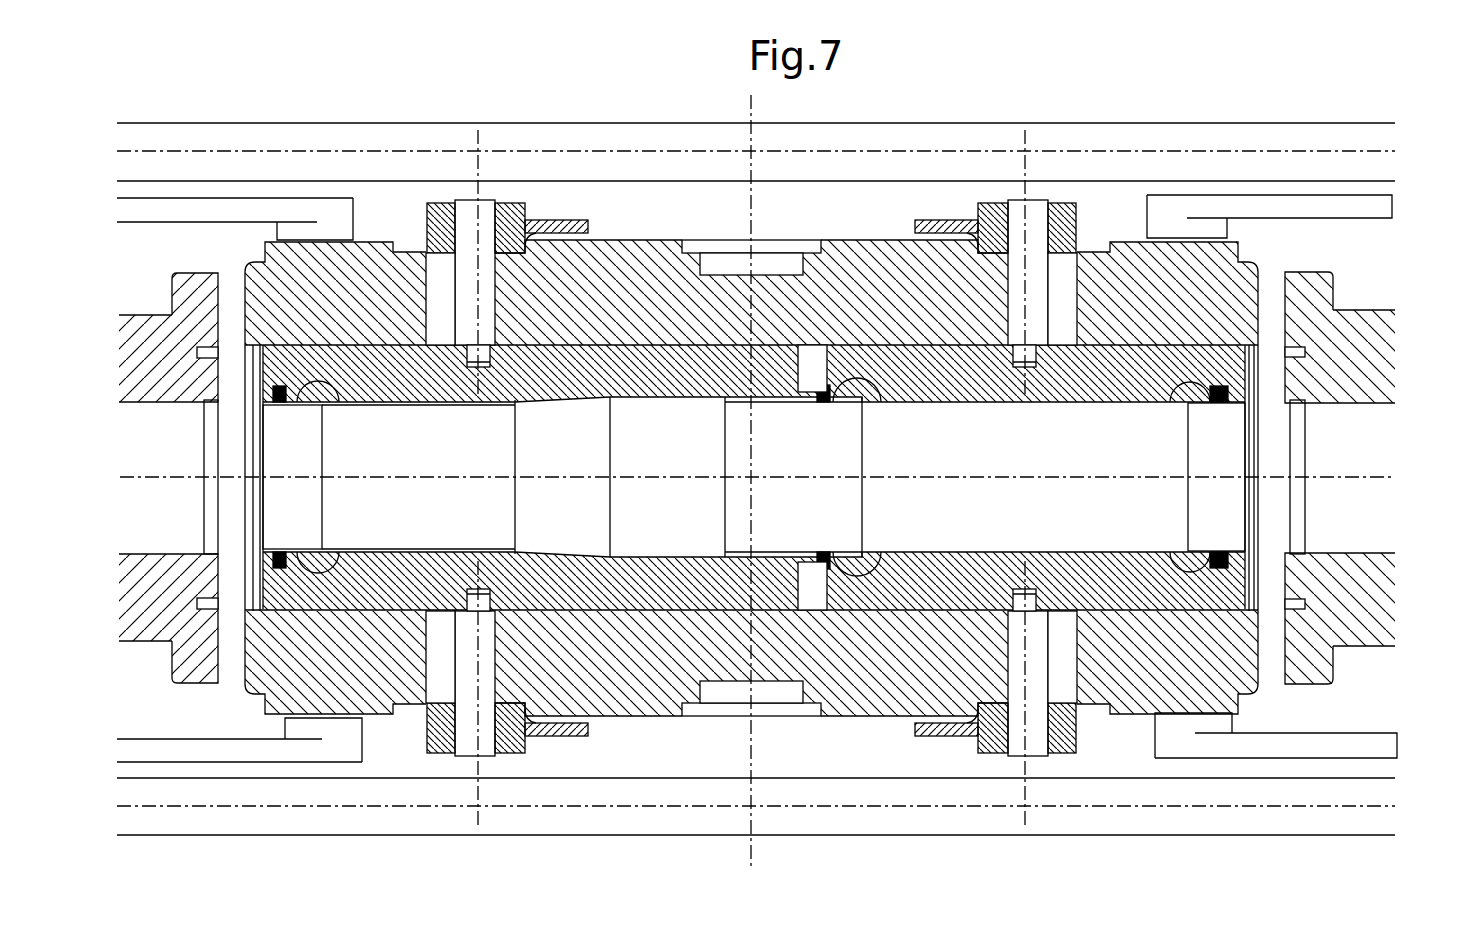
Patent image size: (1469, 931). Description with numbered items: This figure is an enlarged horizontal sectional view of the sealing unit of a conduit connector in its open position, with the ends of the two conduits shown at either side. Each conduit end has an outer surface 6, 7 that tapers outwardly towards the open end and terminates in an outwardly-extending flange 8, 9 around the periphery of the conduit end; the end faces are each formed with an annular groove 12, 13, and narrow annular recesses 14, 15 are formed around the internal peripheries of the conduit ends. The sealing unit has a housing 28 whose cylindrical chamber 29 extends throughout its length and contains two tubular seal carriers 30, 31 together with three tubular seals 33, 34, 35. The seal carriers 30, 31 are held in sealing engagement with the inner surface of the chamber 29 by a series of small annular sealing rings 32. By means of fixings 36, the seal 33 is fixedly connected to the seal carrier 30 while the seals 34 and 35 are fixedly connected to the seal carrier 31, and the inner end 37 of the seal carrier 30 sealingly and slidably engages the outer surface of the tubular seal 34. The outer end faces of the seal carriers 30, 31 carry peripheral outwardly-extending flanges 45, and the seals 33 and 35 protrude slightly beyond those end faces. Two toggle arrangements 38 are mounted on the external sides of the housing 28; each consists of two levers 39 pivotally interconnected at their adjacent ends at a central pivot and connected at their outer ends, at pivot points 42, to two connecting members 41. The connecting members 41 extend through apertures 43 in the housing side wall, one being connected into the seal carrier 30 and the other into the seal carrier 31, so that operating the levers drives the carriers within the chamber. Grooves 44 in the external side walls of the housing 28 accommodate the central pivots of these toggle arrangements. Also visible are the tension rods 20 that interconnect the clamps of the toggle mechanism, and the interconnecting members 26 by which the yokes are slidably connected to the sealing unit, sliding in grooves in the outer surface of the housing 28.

The outer surface 6 is at (148, 315).
The outer surface 7 is at (1382, 313).
The outwardly-extending flange 8 is at (202, 282).
The outwardly-extending flange 9 is at (1310, 280).
The annular groove 12 is at (203, 350).
The annular groove 13 is at (1312, 350).
The narrow annular recess 14 is at (208, 407).
The narrow annular recess 15 is at (1298, 407).
The tension rod 20 is at (638, 133).
The interconnecting member 26 is at (238, 208).
The housing 28 is at (657, 260).
The cylindrical chamber 29 is at (1004, 466).
The tubular seal carrier 30 is at (577, 370).
The tubular seal carrier 31 is at (1080, 383).
The annular sealing ring 32 is at (263, 350).
The tubular seal 33 is at (310, 491).
The tubular seal 34 is at (848, 449).
The tubular seal 35 is at (1205, 487).
The fixing 36 is at (338, 404).
The inner end 37 is at (790, 562).
The toggle arrangement 38 is at (931, 206).
The lever 39 is at (562, 222).
The connecting member 41 is at (468, 222).
The pivot point 42 is at (483, 212).
The aperture 43 is at (433, 304).
The groove 44 is at (778, 263).
The peripheral outwardly-extending flange 45 is at (262, 348).